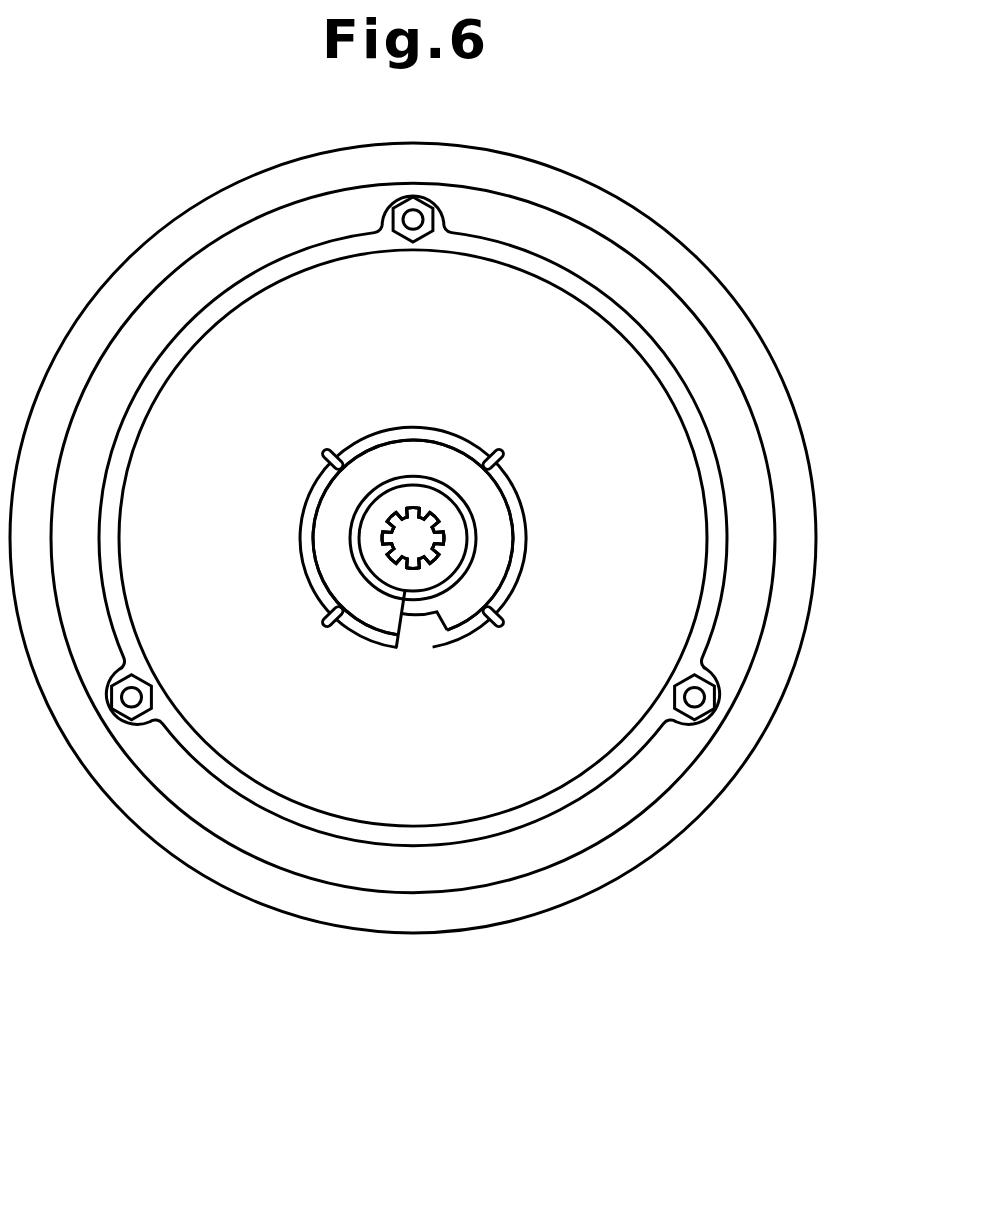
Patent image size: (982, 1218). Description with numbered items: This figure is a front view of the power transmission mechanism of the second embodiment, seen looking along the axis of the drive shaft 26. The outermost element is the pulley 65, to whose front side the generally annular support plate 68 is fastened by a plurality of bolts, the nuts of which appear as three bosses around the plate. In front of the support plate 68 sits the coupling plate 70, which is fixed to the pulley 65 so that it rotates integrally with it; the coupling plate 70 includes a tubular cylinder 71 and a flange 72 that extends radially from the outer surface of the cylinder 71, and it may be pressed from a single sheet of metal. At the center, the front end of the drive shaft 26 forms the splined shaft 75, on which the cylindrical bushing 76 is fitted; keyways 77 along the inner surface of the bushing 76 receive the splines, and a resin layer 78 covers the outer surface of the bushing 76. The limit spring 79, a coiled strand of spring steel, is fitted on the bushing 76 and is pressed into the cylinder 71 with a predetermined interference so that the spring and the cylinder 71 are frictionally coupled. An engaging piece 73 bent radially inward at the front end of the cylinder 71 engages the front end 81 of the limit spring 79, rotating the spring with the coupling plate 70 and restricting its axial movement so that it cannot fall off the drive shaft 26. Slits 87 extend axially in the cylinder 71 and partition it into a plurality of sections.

The drive shaft 26 is at (403, 512).
The pulley 65 is at (698, 260).
The support plate 68 is at (722, 465).
The coupling plate 70 is at (495, 793).
The tubular cylinder 71 is at (307, 538).
The flange 72 is at (635, 417).
The engaging piece 73 is at (428, 625).
The splined shaft 75 is at (407, 520).
The cylindrical bushing 76 is at (427, 498).
The keyways 77 is at (393, 558).
The resin layer 78 is at (463, 495).
The limit spring 79 is at (502, 550).
The front end 81 is at (400, 632).
The slits 87 is at (323, 465).